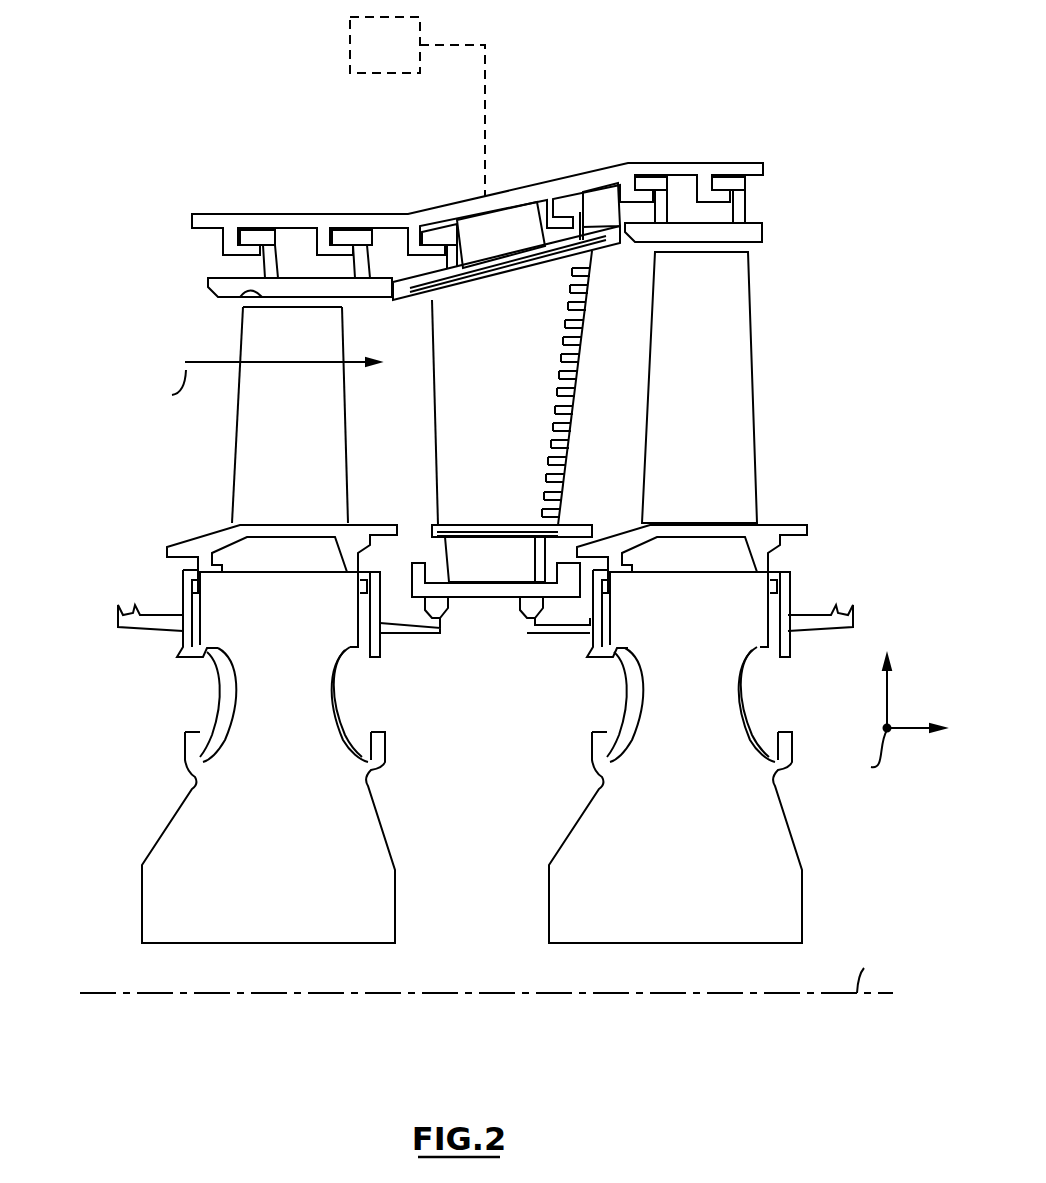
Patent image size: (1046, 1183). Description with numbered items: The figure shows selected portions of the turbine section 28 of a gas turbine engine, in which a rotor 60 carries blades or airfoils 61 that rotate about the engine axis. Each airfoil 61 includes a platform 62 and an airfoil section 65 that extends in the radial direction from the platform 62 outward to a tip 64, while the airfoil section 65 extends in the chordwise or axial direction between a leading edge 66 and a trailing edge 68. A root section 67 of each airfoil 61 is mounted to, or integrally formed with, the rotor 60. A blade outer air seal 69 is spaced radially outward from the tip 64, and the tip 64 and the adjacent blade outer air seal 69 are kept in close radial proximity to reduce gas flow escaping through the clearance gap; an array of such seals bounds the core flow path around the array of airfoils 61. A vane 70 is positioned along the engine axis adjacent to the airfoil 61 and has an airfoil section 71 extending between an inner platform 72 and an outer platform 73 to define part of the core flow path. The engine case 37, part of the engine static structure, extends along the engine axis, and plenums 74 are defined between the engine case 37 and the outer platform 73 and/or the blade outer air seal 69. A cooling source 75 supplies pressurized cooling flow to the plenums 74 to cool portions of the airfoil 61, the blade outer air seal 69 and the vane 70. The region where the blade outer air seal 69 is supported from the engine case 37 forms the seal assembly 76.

The turbine section 28 is at (112, 150).
The engine case 37 is at (252, 213).
The rotor 60 is at (150, 828).
The airfoil 61 is at (356, 410).
The platform 62 is at (180, 543).
The tip 64 is at (243, 300).
The airfoil section 65 is at (268, 428).
The leading edge 66 is at (233, 470).
The root section 67 is at (218, 622).
The trailing edge 68 is at (349, 470).
The blade outer air seal 69 is at (200, 283).
The vane 70 is at (586, 380).
The airfoil section 71 is at (525, 472).
The inner platform 72 is at (572, 528).
The outer platform 73 is at (607, 242).
The plenum 74 is at (300, 254).
The cooling source 75 is at (400, 59).
The seal assembly 76 is at (603, 140).